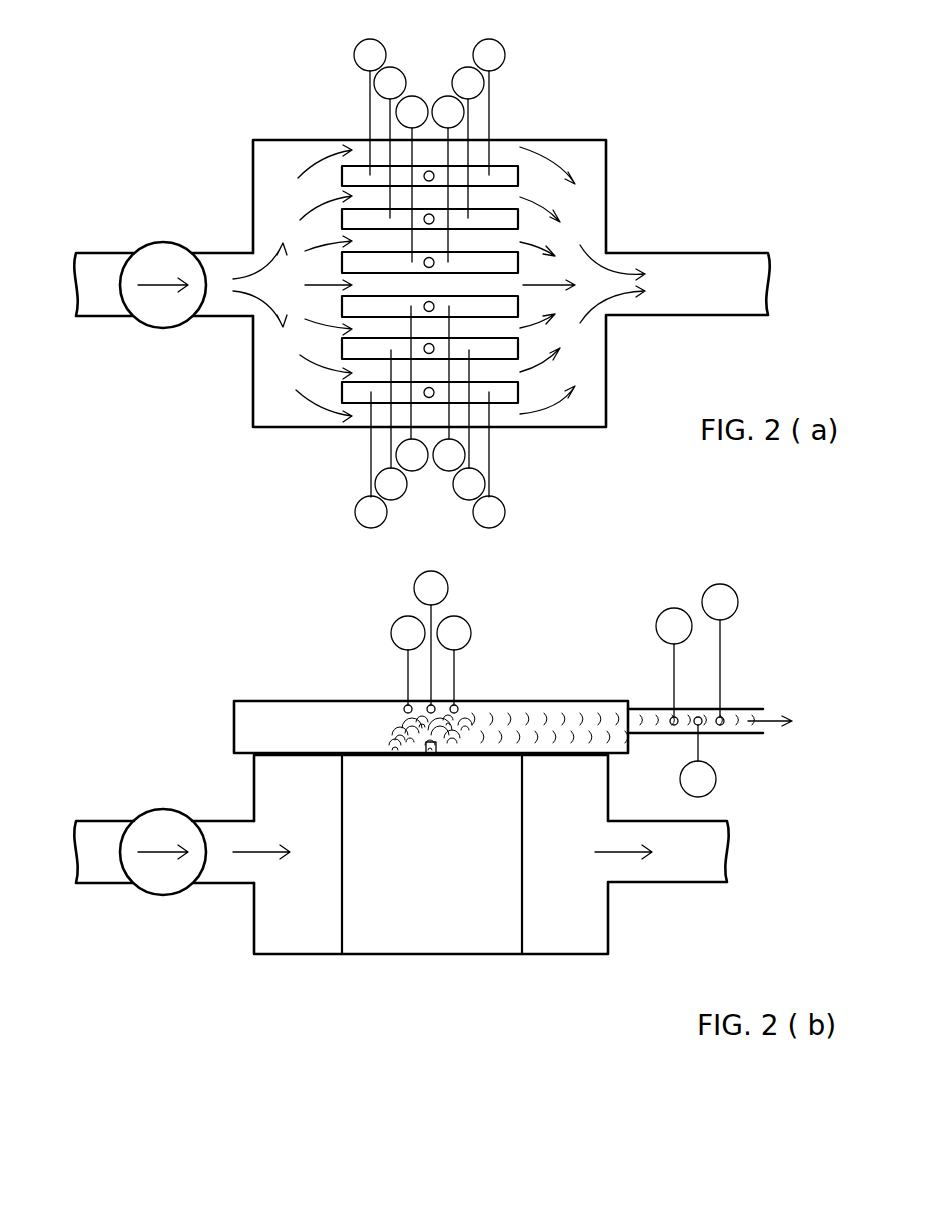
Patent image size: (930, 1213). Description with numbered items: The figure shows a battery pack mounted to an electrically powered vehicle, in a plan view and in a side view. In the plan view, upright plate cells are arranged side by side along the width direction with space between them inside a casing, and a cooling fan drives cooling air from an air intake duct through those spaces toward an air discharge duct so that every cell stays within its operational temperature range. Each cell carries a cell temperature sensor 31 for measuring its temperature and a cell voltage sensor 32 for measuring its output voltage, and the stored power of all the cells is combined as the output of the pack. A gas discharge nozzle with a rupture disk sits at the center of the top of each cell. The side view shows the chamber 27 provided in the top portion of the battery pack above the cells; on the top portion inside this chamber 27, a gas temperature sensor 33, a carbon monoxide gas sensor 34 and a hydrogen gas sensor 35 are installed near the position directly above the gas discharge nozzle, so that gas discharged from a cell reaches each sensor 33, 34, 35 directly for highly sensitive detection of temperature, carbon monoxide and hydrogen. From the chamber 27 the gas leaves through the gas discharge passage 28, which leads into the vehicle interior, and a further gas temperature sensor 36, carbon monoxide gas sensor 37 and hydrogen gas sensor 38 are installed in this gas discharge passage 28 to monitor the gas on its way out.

The chamber 27 is at (272, 701).
The gas discharge passage 28 is at (657, 709).
The cell temperature sensor 31 is at (378, 42).
The cell voltage sensor 32 is at (504, 42).
The gas temperature sensor 33 is at (397, 620).
The carbon monoxide gas sensor 34 is at (446, 583).
The hydrogen gas sensor 35 is at (470, 625).
The gas temperature sensor 36 is at (672, 608).
The carbon monoxide gas sensor 37 is at (738, 590).
The hydrogen gas sensor 38 is at (716, 774).